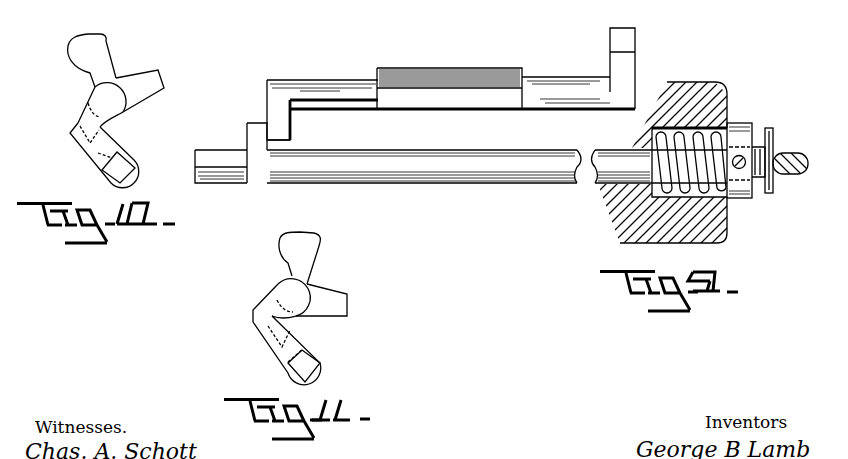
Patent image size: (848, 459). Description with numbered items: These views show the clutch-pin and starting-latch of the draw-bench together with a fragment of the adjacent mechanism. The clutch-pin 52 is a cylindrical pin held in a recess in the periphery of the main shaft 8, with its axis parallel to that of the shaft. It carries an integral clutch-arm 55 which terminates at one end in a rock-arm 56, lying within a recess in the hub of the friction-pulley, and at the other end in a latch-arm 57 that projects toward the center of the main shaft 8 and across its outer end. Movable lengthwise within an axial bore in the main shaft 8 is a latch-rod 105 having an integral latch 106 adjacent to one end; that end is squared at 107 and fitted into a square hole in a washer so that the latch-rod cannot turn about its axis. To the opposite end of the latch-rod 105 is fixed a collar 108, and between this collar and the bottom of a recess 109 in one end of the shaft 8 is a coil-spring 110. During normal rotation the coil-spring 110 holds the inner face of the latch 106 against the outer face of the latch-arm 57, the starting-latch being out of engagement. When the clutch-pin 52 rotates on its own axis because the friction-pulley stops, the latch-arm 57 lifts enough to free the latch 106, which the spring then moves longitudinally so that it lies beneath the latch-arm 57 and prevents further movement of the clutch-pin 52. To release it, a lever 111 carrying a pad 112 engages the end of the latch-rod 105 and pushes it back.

In FIG. 9, the main shaft 8 is at (703, 82).
In FIG. 9, the clutch-pin 52 is at (322, 78).
In FIG. 9, the clutch-arm 55 is at (430, 65).
In FIG. 10, the clutch-arm 55 is at (161, 82).
In FIG. 11, the clutch-arm 55 is at (343, 300).
In FIG. 9, the rock-arm 56 is at (635, 37).
In FIG. 10, the rock-arm 56 is at (103, 46).
In FIG. 11, the rock-arm 56 is at (313, 250).
In FIG. 9, the latch-arm 57 is at (283, 127).
In FIG. 10, the latch-arm 57 is at (88, 113).
In FIG. 11, the latch-arm 57 is at (255, 310).
In FIG. 9, the latch-rod 105 is at (497, 183).
In FIG. 10, the latch-rod 105 is at (100, 90).
In FIG. 11, the latch-rod 105 is at (290, 287).
In FIG. 9, the latch 106 is at (247, 128).
In FIG. 10, the latch 106 is at (110, 137).
In FIG. 11, the latch 106 is at (288, 333).
In FIG. 9, the squared end 107 is at (208, 184).
In FIG. 10, the squared end 107 is at (110, 173).
In FIG. 11, the squared end 107 is at (320, 366).
In FIG. 9, the collar 108 is at (747, 200).
In FIG. 9, the recess 109 is at (700, 120).
In FIG. 9, the coil-spring 110 is at (650, 192).
In FIG. 9, the lever 111 is at (798, 174).
In FIG. 9, the pad 112 is at (773, 133).